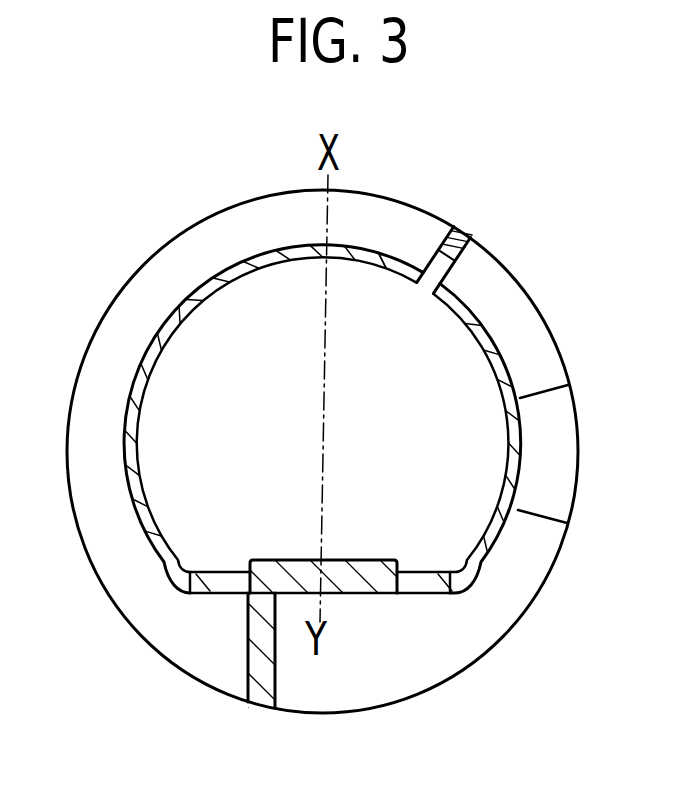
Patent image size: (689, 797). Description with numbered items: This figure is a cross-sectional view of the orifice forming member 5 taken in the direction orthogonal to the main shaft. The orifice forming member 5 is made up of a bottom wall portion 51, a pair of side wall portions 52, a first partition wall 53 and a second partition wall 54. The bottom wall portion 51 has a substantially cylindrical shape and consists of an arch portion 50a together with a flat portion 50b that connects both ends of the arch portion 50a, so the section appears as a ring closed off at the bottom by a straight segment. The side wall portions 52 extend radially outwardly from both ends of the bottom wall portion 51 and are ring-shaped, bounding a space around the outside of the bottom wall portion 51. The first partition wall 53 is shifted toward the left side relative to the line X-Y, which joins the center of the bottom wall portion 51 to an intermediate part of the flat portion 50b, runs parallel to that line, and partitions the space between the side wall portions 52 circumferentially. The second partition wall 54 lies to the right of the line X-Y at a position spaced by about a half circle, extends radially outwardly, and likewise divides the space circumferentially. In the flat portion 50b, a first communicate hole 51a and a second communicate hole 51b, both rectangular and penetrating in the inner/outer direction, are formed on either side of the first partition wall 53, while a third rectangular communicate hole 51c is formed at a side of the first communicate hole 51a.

The orifice forming member 5 is at (172, 220).
The arch portion 50a is at (222, 285).
The flat portion 50b is at (340, 571).
The bottom wall portion 51 is at (133, 448).
The first communicate hole 51a is at (213, 585).
The second communicate hole 51b is at (417, 585).
The third communicate hole 51c is at (399, 259).
The side wall portion 52 is at (128, 316).
The first partition wall 53 is at (263, 647).
The second partition wall 54 is at (458, 236).